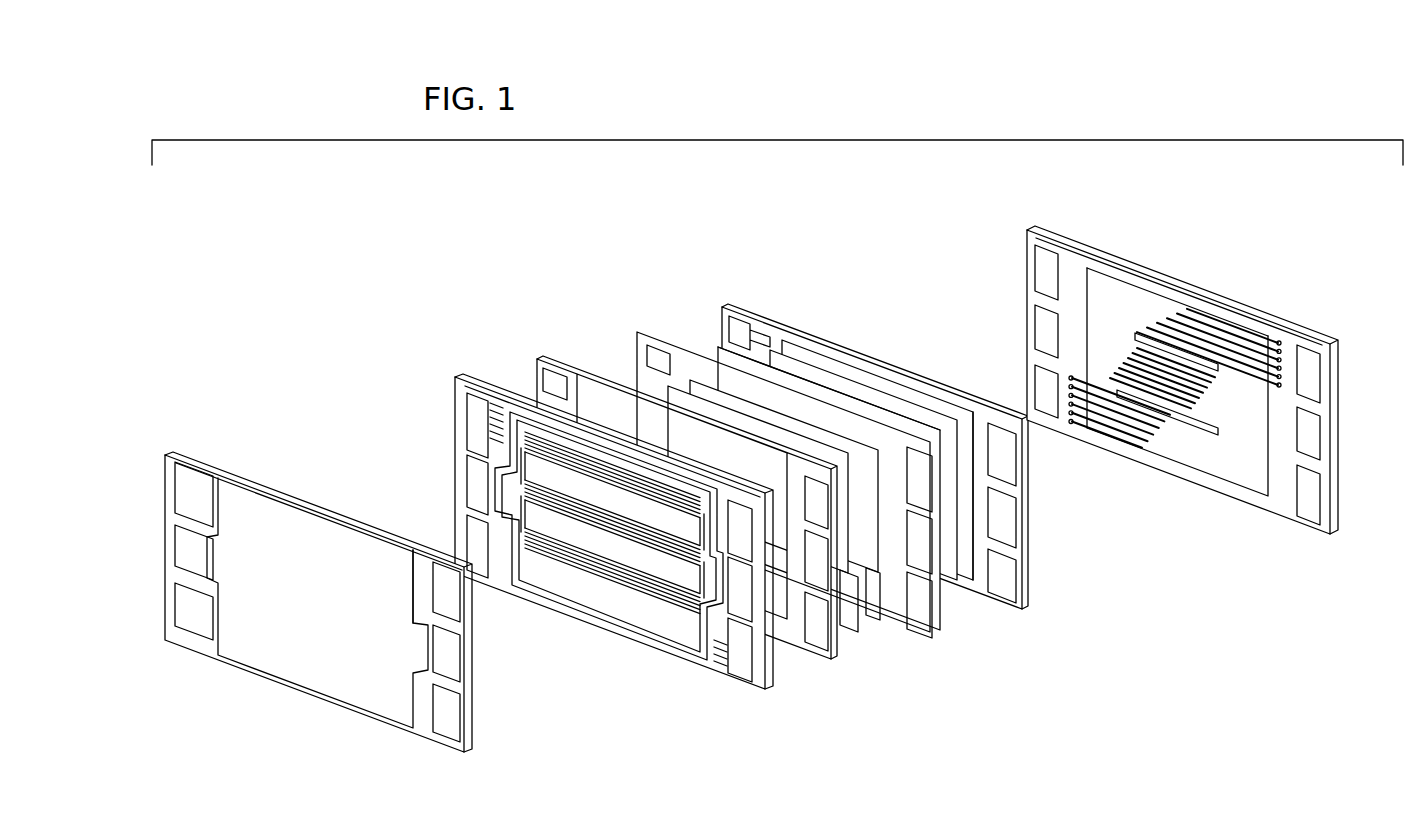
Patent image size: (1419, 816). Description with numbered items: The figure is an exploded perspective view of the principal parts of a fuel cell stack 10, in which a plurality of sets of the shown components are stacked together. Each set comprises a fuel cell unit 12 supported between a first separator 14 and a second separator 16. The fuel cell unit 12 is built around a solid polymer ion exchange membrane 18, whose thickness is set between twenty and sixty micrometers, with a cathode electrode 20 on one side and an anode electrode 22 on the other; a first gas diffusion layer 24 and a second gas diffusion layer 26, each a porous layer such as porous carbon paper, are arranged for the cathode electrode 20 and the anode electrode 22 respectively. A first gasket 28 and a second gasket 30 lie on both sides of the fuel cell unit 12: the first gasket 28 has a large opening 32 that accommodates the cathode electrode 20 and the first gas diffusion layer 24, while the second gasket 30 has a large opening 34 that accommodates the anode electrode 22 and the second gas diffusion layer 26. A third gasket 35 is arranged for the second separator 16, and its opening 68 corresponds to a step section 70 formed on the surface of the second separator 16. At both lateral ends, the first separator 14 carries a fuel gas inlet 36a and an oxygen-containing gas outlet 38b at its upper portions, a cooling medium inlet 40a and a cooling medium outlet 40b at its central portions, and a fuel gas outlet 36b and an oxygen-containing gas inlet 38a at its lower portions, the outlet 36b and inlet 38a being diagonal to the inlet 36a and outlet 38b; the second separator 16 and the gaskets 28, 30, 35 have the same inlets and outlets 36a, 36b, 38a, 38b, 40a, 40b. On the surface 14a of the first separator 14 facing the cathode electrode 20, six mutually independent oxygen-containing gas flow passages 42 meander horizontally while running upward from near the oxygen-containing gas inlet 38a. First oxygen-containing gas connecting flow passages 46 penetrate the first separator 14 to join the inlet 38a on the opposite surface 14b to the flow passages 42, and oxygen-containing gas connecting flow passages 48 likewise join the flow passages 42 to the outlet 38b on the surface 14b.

The fuel cell stack 10 is at (810, 195).
The fuel cell unit 12 is at (677, 310).
The first separator 14 is at (1182, 352).
The surface 14a is at (1165, 290).
The surface 14b is at (1205, 302).
The second separator 16 is at (582, 503).
The solid polymer ion exchange membrane 18 is at (903, 623).
The cathode electrode 20 is at (787, 373).
The anode electrode 22 is at (872, 618).
The first gas diffusion layer 24 is at (837, 378).
The second gas diffusion layer 26 is at (848, 612).
The first gasket 28 is at (772, 311).
The second gasket 30 is at (535, 353).
The large opening 32 is at (966, 596).
The large opening 34 is at (642, 432).
The third gasket 35 is at (318, 569).
The fuel gas inlet 36a is at (205, 505).
The fuel gas outlet 36b is at (445, 705).
The oxygen-containing gas inlet 38a is at (195, 603).
The oxygen-containing gas outlet 38b is at (445, 600).
The cooling medium inlet 40a is at (195, 545).
The cooling medium outlet 40b is at (445, 650).
The oxygen-containing gas flow passages 42 is at (1242, 335).
The first oxygen-containing gas connecting flow passages 46 is at (1072, 432).
The oxygen-containing gas connecting flow passages 48 is at (1282, 346).
The opening 68 is at (412, 690).
The step section 70 is at (630, 625).